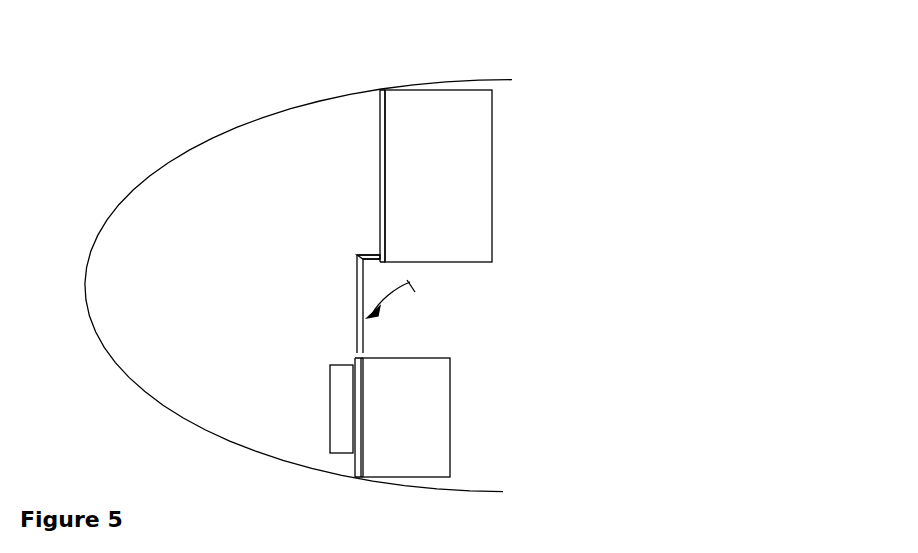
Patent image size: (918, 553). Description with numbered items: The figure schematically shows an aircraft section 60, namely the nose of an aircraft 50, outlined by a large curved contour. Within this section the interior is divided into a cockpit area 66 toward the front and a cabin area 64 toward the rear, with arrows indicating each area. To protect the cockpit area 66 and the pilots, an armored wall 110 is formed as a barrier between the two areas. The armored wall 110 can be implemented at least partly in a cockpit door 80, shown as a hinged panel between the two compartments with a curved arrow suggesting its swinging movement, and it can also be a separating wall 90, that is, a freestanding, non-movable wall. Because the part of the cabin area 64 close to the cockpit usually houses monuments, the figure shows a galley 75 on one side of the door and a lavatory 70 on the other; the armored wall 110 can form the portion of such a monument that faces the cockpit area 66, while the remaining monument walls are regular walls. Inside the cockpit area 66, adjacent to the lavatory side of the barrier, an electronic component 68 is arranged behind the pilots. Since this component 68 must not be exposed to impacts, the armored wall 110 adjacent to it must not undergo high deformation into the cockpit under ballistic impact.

The aircraft 50 is at (157, 172).
The aircraft section 60 is at (554, 160).
The cabin area 64 is at (439, 424).
The cockpit area 66 is at (203, 364).
The electronic component 68 is at (340, 435).
The lavatory 70 is at (433, 440).
The galley 75 is at (468, 112).
The cockpit door 80 is at (365, 330).
The separating wall 90 is at (368, 252).
The armored wall 110 is at (377, 108).